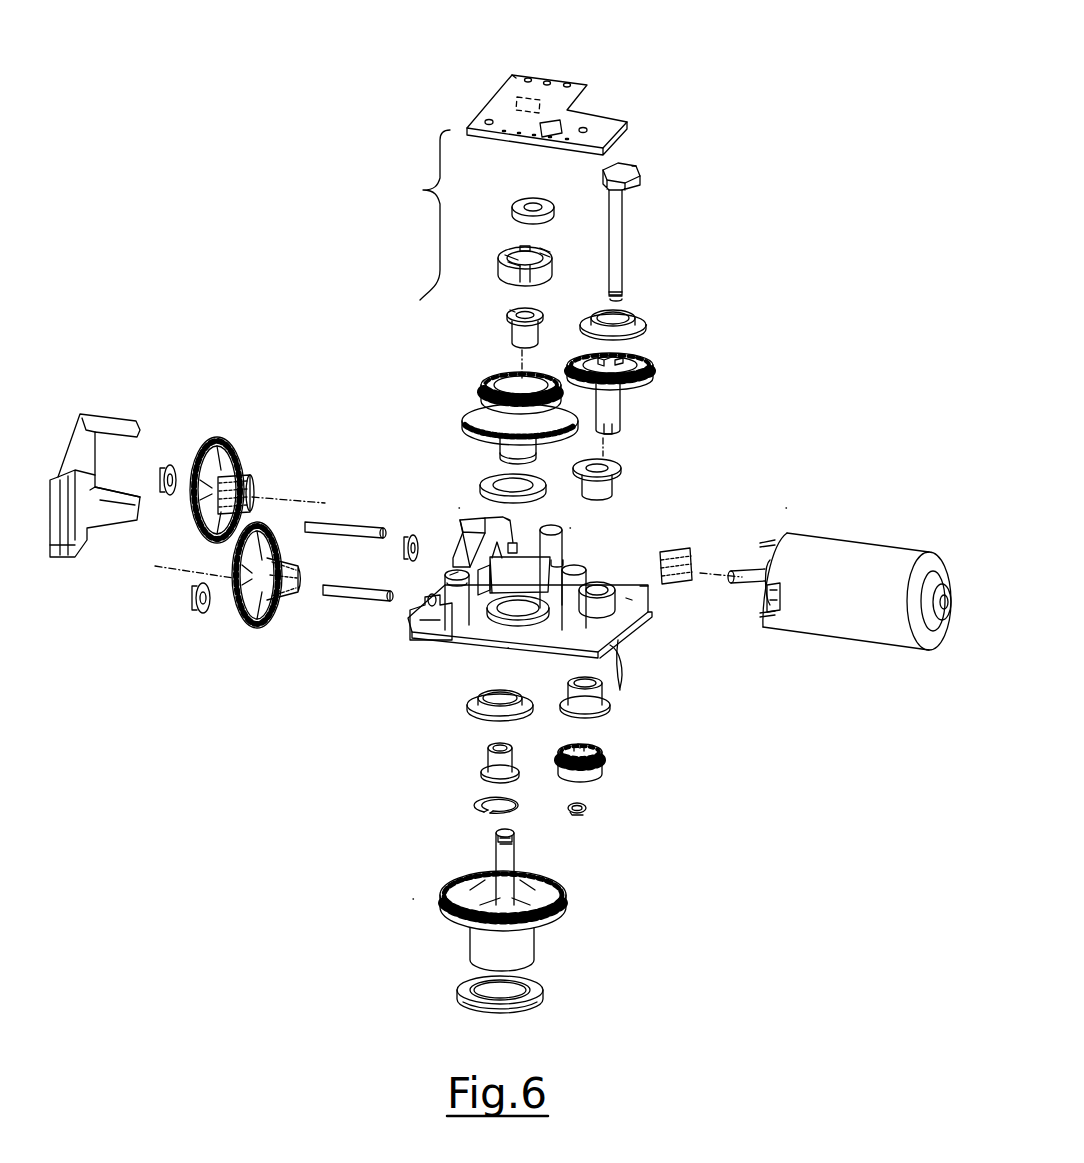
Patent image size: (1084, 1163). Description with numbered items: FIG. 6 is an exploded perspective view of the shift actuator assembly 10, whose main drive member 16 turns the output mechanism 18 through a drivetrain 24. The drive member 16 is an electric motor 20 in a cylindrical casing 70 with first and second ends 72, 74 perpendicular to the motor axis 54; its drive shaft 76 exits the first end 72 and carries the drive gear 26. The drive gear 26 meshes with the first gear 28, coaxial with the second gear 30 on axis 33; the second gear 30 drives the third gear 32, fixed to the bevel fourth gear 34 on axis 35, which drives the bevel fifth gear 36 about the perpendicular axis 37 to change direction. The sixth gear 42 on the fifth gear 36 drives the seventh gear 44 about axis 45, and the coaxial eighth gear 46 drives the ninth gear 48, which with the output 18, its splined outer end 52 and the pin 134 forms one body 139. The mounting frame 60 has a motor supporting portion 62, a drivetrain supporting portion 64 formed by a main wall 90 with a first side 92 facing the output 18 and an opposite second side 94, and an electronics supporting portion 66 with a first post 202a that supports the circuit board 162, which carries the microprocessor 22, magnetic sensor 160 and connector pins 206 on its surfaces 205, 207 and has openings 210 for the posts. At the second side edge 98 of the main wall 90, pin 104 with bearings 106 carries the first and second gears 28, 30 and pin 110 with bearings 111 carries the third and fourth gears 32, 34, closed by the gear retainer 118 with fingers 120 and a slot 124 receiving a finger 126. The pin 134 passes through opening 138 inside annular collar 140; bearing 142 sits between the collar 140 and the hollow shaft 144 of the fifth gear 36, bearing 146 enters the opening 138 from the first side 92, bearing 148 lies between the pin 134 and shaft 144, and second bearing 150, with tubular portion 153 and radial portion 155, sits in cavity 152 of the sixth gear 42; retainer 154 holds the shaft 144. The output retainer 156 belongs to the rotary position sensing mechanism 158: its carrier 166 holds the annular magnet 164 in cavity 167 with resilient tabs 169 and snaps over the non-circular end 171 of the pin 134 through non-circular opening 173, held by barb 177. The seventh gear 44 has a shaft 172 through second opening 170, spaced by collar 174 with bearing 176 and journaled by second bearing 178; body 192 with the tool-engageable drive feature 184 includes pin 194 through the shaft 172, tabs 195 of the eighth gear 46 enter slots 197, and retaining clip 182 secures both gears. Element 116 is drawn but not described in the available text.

The shift actuator assembly 10 is at (735, 43).
The main drive member 16 is at (787, 503).
The output mechanism 18 is at (548, 946).
The electric motor 20 is at (846, 595).
The microprocessor 22 is at (551, 121).
The drivetrain 24 is at (667, 310).
The drive gear 26 is at (688, 557).
The first gear 28 is at (217, 437).
The second gear 30 is at (241, 474).
The third gear 32 is at (282, 599).
The common axis 33 is at (287, 497).
The fourth gear 34 is at (285, 566).
The axis 35 is at (150, 573).
The fifth gear 36 is at (466, 431).
The axis 37 is at (518, 361).
The sixth gear 42 is at (484, 384).
The seventh gear 44 is at (654, 369).
The axis 45 is at (610, 449).
The eighth gear 46 is at (603, 754).
The ninth gear 48 is at (561, 893).
The outer end 52 is at (476, 964).
The motor axis 54 is at (703, 580).
The mounting frame 60 is at (561, 633).
The motor supporting portion 62 is at (458, 504).
The drivetrain supporting portion 64 is at (506, 650).
The electronics supporting portion 66 is at (573, 525).
The cylindrical casing 70 is at (862, 548).
The first end 72 is at (765, 623).
The second end 74 is at (941, 584).
The drive shaft 76 is at (745, 570).
The main wall 90 is at (637, 627).
The first side 92 is at (632, 636).
The second side 94 is at (622, 598).
The second side edge 98 is at (458, 527).
The pin 104 is at (345, 524).
The bearings 106 is at (168, 465).
The pin 110 is at (352, 600).
The bearings 111 is at (200, 611).
The base wall 116 is at (618, 690).
The gear retainer 118 is at (90, 489).
The fingers 120 is at (130, 503).
The slot 124 is at (86, 545).
The finger 126 is at (412, 640).
The pin 134 is at (500, 858).
The opening 138 is at (522, 612).
The body 139 is at (410, 899).
The annular collar 140 is at (500, 615).
The bearing 142 is at (541, 496).
The hollow shaft 144 is at (540, 443).
The bearing 146 is at (486, 721).
The bearing 148 is at (485, 774).
The second bearing 150 is at (540, 308).
The cavity 152 is at (525, 378).
The tubular portion 153 is at (537, 333).
The retainer 154 is at (527, 812).
The radially outwardly extending portion 155 is at (513, 322).
The output retainer 156 is at (484, 252).
The rotary position sensing mechanism 158 is at (418, 215).
The magnetic sensor 160 is at (517, 99).
The circuit board 162 is at (603, 125).
The magnet 164 is at (538, 197).
The carrier 166 is at (546, 259).
The annular cavity 167 is at (509, 257).
The tabs 169 is at (531, 247).
The second opening 170 is at (589, 580).
The non-circular end 171 is at (516, 832).
The shaft 172 is at (680, 401).
The non-circular opening 173 is at (512, 263).
The collar 174 is at (628, 598).
The bearing 176 is at (615, 492).
The barb 177 is at (520, 842).
The second bearing 178 is at (602, 712).
The retaining clip 182 is at (588, 803).
The drive feature 184 is at (657, 156).
The body 192 is at (662, 232).
The pin 194 is at (622, 246).
The tabs 195 is at (575, 749).
The slots 197 is at (606, 423).
The first post 202a is at (455, 575).
The first surface 205 is at (514, 76).
The connector pins 206 is at (481, 125).
The second surface 207 is at (487, 137).
The openings 210 is at (547, 81).